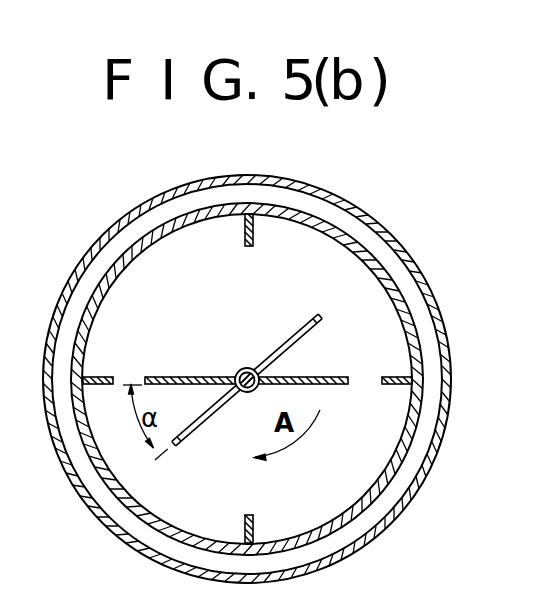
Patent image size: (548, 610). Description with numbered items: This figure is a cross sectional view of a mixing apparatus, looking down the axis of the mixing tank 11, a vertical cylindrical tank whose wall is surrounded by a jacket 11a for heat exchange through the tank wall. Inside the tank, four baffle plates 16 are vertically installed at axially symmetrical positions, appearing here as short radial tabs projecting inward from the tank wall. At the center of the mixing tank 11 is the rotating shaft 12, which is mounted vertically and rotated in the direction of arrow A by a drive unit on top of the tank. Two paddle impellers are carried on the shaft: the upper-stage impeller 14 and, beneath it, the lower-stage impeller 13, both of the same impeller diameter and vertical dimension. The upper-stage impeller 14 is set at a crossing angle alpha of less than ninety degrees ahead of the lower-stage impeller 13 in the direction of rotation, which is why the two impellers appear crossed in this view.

The mixing tank 11 is at (352, 240).
The jacket 11a is at (350, 206).
The rotating shaft 12 is at (242, 367).
The lower-stage impeller 13 is at (326, 316).
The upper-stage impeller 14 is at (335, 377).
The baffle plates 16 is at (255, 221).